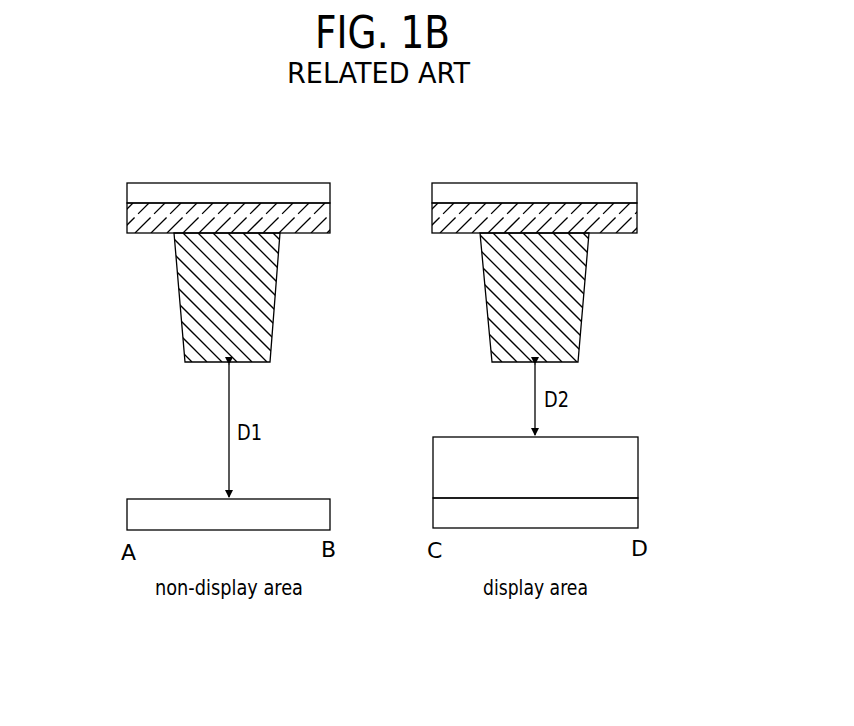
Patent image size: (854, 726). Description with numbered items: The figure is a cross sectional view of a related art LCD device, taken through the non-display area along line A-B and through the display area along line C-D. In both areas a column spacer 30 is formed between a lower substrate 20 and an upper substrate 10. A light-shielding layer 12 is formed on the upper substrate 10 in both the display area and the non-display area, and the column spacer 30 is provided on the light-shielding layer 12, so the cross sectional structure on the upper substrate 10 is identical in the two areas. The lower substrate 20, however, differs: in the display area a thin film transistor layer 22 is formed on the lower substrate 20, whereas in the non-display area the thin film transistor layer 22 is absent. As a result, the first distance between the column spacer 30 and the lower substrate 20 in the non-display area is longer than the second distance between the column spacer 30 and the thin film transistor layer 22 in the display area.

The upper substrate 10 is at (132, 194).
The light-shielding layer 12 is at (132, 218).
The column spacer 30 is at (203, 303).
The lower substrate 20 is at (132, 515).
The thin film transistor layer 22 is at (630, 467).